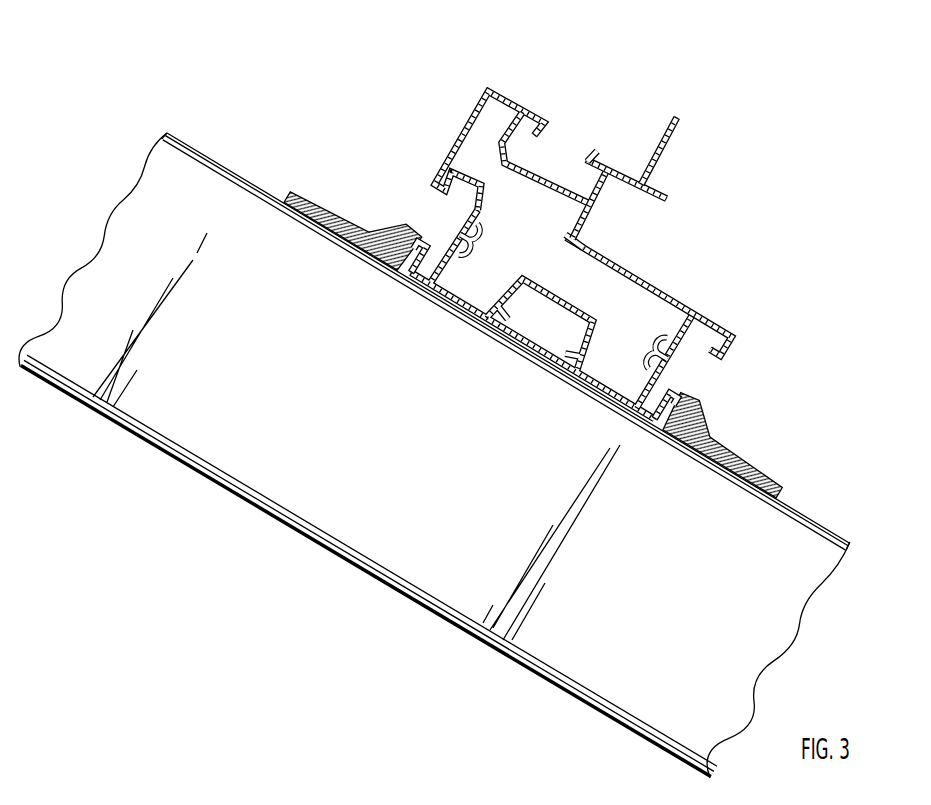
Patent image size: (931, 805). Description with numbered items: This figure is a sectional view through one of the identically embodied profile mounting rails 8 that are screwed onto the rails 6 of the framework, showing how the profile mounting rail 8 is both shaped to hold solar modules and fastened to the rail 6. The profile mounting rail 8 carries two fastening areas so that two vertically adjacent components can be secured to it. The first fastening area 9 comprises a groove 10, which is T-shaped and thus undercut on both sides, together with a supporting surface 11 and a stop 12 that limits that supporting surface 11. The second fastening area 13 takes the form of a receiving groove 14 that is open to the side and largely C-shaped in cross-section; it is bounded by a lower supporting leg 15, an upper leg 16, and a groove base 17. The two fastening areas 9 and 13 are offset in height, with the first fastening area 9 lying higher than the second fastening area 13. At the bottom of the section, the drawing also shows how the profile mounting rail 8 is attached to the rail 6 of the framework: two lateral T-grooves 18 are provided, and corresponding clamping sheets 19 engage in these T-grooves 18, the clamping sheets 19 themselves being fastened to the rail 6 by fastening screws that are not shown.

The rail 6 is at (362, 545).
The profile mounting rail 8 is at (746, 163).
The first fastening area 9 is at (594, 86).
The groove 10 is at (522, 173).
The supporting surface 11 is at (592, 157).
The stop 12 is at (659, 150).
The second fastening area 13 is at (688, 212).
The receiving groove 14 is at (574, 241).
The lower supporting leg 15 is at (643, 297).
The upper leg 16 is at (626, 179).
The groove base 17 is at (589, 204).
The lateral T-groove 18 is at (539, 333).
The clamping sheet 19 is at (306, 210).